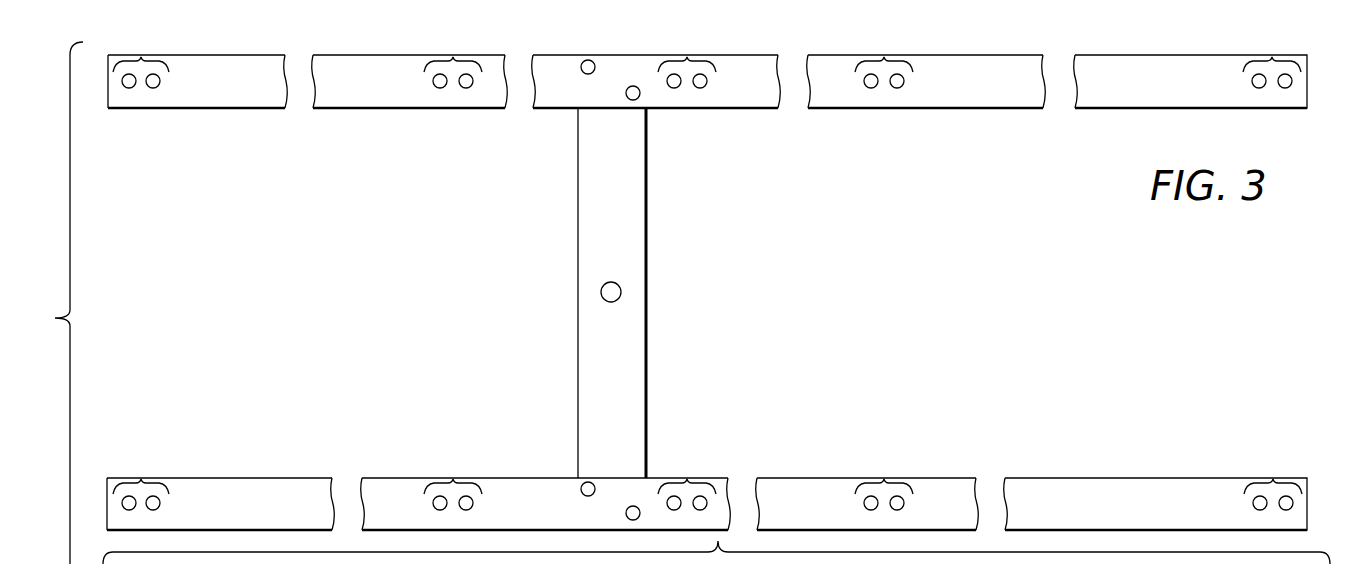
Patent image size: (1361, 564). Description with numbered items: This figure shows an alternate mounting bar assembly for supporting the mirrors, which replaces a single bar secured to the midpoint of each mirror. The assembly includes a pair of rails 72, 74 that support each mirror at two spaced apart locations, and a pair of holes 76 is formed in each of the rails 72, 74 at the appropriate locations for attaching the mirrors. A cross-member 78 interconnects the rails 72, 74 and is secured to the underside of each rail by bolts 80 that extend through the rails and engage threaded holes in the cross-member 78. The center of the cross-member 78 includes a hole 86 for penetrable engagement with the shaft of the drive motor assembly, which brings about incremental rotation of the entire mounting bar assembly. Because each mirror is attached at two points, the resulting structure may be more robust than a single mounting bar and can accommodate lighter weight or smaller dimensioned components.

The rail 72 is at (803, 478).
The rail 74 is at (970, 108).
The holes 76 is at (141, 57).
The cross-member 78 is at (635, 381).
The bolts 80 is at (585, 60).
The hole 86 is at (621, 293).